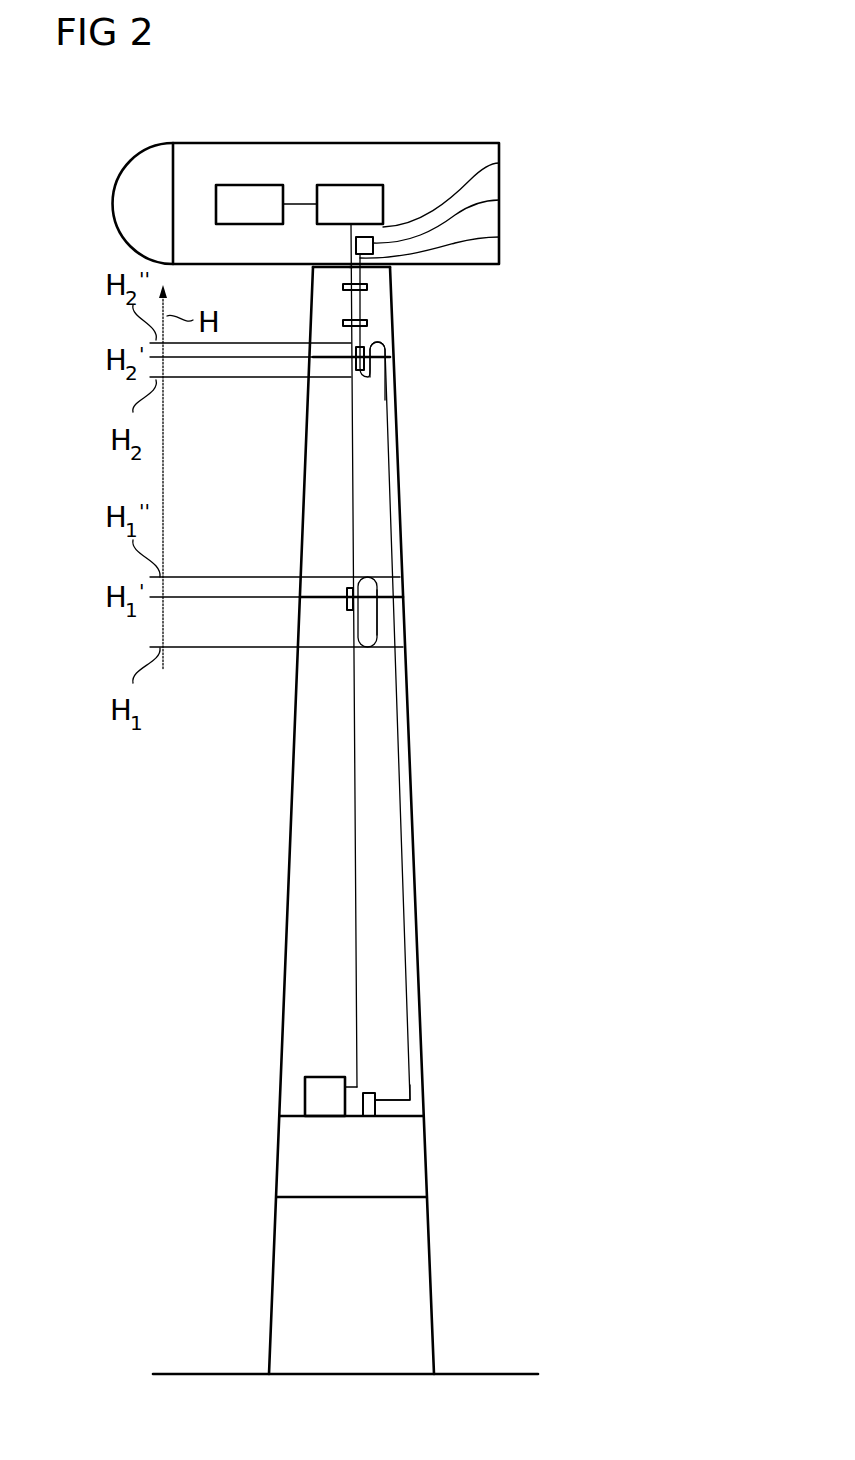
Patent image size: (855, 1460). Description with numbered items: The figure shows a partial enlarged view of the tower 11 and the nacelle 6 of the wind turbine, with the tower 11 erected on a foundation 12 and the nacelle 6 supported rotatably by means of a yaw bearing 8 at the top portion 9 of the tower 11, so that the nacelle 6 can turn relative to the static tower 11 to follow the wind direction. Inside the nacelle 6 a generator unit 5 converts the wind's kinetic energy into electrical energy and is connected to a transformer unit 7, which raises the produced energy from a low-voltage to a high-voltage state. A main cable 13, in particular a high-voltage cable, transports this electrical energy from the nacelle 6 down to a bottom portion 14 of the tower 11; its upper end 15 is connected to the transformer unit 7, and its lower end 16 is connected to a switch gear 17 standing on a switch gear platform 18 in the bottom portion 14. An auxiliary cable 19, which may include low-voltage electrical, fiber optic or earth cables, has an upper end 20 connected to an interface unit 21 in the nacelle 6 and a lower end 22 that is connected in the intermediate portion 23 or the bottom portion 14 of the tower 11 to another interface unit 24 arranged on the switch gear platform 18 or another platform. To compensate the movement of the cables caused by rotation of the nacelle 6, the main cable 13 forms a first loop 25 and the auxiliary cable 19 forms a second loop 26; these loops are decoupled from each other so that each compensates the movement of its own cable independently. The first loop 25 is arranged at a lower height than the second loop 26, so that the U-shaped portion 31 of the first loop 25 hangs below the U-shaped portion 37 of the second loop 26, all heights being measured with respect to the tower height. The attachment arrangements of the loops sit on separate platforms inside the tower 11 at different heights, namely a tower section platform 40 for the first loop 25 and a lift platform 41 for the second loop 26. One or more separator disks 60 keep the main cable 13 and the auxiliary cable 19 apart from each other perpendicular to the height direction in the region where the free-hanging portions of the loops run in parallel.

The generator unit 5 is at (248, 185).
The nacelle 6 is at (440, 143).
The transformer unit 7 is at (350, 185).
The yaw bearing 8 is at (312, 268).
The top portion 9 is at (433, 285).
The tower 11 is at (303, 507).
The foundation 12 is at (270, 1290).
The main cable 13 is at (353, 432).
The bottom portion 14 is at (277, 1190).
The upper end 15 is at (499, 163).
The lower end 16 is at (360, 1083).
The switch gear 17 is at (305, 1085).
The switch gear platform 18 is at (293, 1107).
The auxiliary cable 19 is at (392, 505).
The upper end 20 is at (499, 237).
The interface unit 21 is at (499, 200).
The lower end 22 is at (390, 1092).
The intermediate portion 23 is at (290, 845).
The interface unit 24 is at (377, 1105).
The first loop 25 is at (378, 610).
The second loop 26 is at (365, 364).
The U-shaped portion 31 is at (370, 645).
The U-shaped portion 37 is at (367, 378).
The platform 40 is at (308, 597).
The platform 41 is at (318, 357).
The separator disks 60 is at (367, 287).